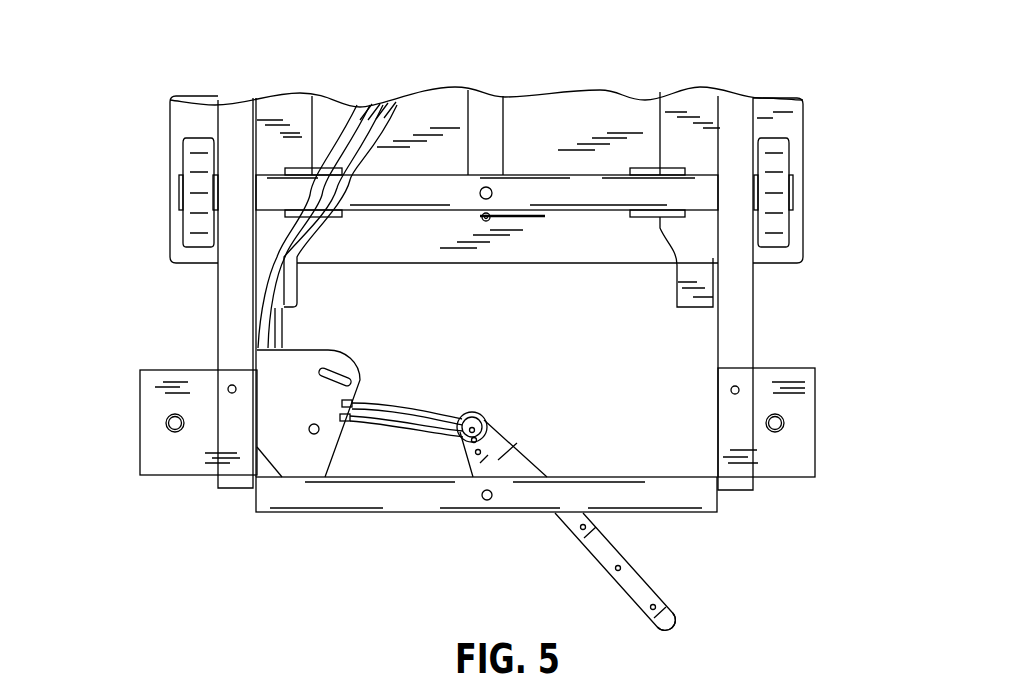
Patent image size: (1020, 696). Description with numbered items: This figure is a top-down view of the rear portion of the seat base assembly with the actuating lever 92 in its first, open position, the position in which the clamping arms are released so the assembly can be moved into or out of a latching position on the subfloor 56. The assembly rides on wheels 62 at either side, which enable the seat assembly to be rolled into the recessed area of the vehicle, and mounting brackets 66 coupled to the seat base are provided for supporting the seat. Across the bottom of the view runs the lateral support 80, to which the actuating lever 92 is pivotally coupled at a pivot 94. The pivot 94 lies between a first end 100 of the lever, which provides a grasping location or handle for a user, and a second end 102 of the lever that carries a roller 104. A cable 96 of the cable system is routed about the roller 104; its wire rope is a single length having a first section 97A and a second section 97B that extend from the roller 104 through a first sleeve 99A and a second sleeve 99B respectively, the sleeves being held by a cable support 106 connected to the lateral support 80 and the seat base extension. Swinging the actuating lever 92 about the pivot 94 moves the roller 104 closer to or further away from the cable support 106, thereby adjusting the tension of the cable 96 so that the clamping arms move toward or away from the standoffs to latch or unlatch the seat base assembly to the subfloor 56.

The subfloor 56 is at (523, 245).
The wheels 62 is at (192, 160).
The mounting brackets 66 is at (150, 423).
The lateral support 80 is at (312, 497).
The actuating lever 92 is at (692, 620).
The pivot 94 is at (487, 500).
The cable 96 is at (372, 174).
The first section 97A is at (417, 418).
The second section 97B is at (410, 435).
The first sleeve 99A is at (375, 125).
The second sleeve 99B is at (348, 137).
The first end 100 is at (638, 583).
The second end 102 is at (518, 462).
The roller 104 is at (468, 413).
The cable support 106 is at (287, 367).